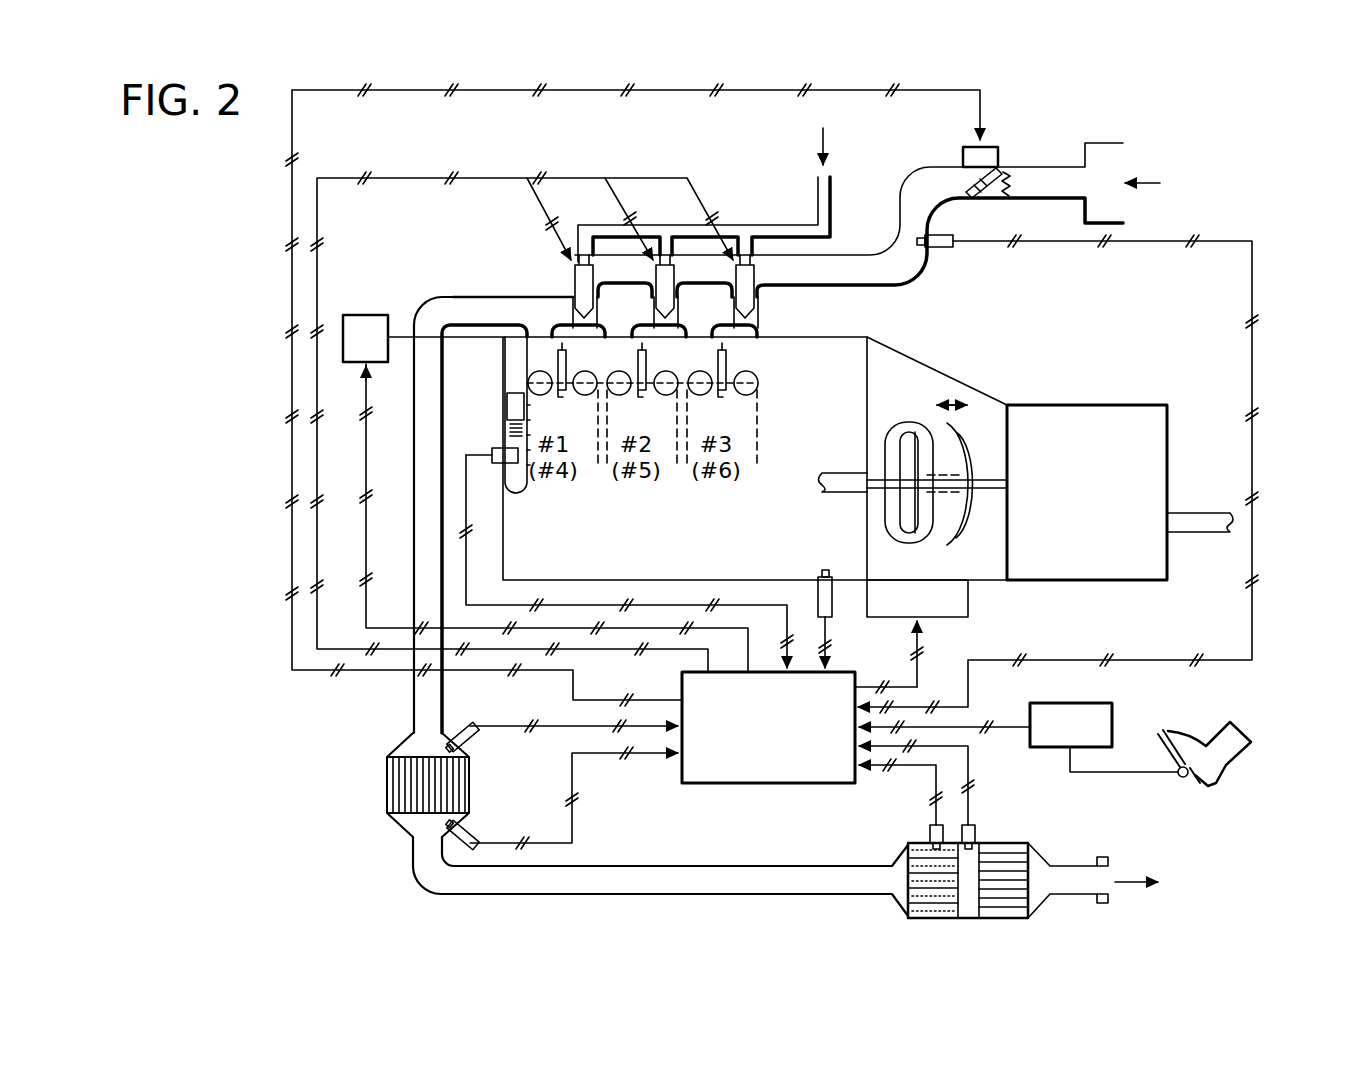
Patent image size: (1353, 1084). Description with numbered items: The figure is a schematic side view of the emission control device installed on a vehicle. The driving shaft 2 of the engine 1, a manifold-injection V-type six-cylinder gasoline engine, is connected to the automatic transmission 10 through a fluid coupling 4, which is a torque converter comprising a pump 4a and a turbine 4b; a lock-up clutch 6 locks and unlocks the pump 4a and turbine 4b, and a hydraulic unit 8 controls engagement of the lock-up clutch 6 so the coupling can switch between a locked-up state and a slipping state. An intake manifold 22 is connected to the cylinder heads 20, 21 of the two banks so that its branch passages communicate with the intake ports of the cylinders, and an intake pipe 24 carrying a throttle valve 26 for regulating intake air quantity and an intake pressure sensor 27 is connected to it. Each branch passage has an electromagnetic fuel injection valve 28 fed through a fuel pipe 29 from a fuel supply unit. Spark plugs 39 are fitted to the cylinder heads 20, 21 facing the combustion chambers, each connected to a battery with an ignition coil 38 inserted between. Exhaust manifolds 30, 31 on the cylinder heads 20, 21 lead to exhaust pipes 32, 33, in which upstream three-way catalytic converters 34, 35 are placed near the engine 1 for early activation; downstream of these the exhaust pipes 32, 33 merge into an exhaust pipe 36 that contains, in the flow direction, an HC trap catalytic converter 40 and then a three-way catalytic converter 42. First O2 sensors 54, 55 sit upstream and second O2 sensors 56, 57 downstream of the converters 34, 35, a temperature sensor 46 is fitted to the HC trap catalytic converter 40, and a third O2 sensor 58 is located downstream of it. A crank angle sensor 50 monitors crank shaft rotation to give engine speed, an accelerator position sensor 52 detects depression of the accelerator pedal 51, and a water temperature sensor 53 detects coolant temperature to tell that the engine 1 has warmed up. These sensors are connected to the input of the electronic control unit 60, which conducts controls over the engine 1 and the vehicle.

The engine body 1 is at (414, 255).
The driving shaft 2 is at (848, 492).
The fluid coupling 4 is at (937, 442).
The pump 4a is at (916, 440).
The turbine 4b is at (900, 440).
The lock-up clutch 6 is at (963, 435).
The hydraulic unit 8 is at (968, 599).
The automatic transmission 10 is at (1125, 405).
The cylinder head 20 is at (512, 366).
The cylinder head 21 is at (485, 415).
The intake manifold 22 is at (693, 268).
The intake pipe 24 is at (936, 172).
The throttle valve 26 is at (990, 146).
The intake pressure sensor 27 is at (942, 250).
The electromagnetic fuel injection valve 28 is at (582, 290).
The fuel pipe 29 is at (832, 192).
The exhaust manifold 30 is at (484, 300).
The exhaust manifold 31 is at (598, 483).
The exhaust pipe 32 is at (421, 407).
The exhaust pipe 33 is at (467, 515).
The three-way catalytic converter 34 is at (387, 778).
The three-way catalytic converter 35 is at (369, 785).
The exhaust pipe 36 is at (687, 866).
The ignition coil 38 is at (357, 313).
The spark plug 39 is at (568, 393).
The HC trap catalytic converter 40 is at (920, 845).
The three-way catalytic converter 42 is at (1008, 848).
The temperature sensor 46 is at (930, 828).
The crank angle sensor 50 is at (833, 610).
The accelerator pedal 51 is at (1183, 780).
The accelerator position sensor 52 is at (1114, 712).
The water temperature sensor 53 is at (491, 450).
The first O2 sensor 54 is at (475, 742).
The first O2 sensor 55 is at (561, 744).
The second O2 sensor 56 is at (470, 827).
The second O2 sensor 57 is at (561, 798).
The third O2 sensor 58 is at (972, 828).
The electronic control unit 60 is at (788, 784).